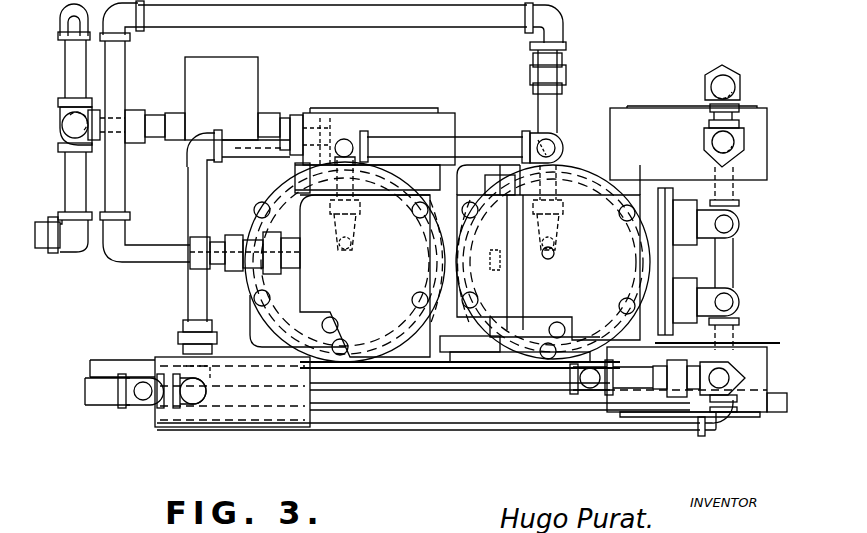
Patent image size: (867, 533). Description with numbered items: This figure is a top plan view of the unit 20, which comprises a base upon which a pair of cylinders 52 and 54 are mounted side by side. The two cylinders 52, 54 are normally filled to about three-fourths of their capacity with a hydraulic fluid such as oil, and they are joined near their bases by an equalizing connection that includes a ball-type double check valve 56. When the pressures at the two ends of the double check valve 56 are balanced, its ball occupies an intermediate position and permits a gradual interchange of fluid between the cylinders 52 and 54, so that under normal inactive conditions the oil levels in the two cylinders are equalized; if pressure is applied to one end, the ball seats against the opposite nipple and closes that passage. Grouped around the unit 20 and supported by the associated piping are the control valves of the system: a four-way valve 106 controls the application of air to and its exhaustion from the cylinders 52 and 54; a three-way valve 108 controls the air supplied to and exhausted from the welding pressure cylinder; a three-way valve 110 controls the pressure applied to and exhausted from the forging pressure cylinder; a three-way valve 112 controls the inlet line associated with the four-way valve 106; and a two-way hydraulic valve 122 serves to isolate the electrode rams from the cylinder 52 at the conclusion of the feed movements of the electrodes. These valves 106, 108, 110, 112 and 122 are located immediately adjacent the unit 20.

The unit 20 is at (598, 88).
The cylinder 52 is at (257, 208).
The cylinder 54 is at (570, 150).
The double check valve 56 is at (450, 357).
The four-way valve 106 is at (345, 112).
The three-way valve 108 is at (758, 352).
The three-way valve 110 is at (765, 158).
The three-way valve 112 is at (225, 420).
The two-way hydraulic valve 122 is at (245, 62).